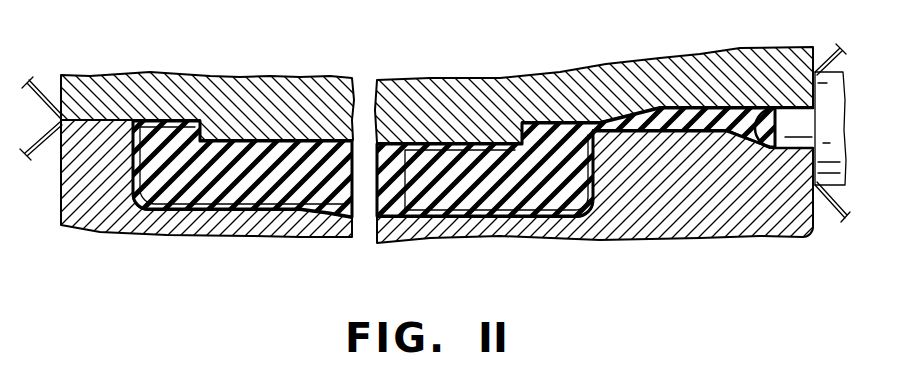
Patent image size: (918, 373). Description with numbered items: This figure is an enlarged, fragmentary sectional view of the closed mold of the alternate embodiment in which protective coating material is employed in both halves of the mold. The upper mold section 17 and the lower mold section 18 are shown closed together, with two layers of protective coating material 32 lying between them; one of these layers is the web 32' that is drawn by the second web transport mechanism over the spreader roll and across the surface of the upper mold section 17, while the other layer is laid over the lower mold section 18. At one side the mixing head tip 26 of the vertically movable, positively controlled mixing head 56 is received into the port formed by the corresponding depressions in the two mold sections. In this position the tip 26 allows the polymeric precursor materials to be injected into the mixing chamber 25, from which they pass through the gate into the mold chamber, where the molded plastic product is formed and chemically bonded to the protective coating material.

The upper mold section 17 is at (405, 87).
The lower mold section 18 is at (167, 226).
The mixing chamber 25 is at (665, 108).
The mixing head tip 26 is at (780, 125).
The protective coating material 32 is at (38, 170).
The web 32' is at (49, 69).
The mixing head 56 is at (835, 178).